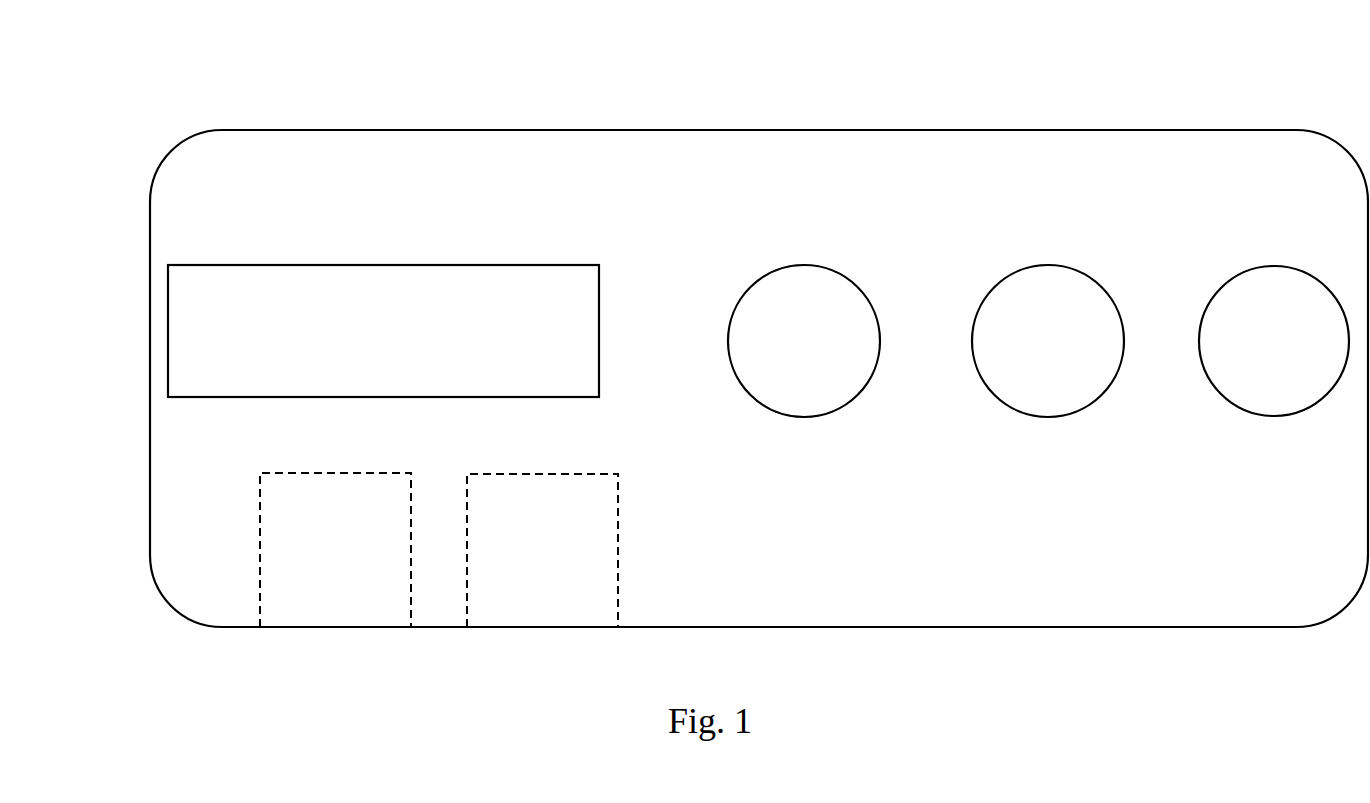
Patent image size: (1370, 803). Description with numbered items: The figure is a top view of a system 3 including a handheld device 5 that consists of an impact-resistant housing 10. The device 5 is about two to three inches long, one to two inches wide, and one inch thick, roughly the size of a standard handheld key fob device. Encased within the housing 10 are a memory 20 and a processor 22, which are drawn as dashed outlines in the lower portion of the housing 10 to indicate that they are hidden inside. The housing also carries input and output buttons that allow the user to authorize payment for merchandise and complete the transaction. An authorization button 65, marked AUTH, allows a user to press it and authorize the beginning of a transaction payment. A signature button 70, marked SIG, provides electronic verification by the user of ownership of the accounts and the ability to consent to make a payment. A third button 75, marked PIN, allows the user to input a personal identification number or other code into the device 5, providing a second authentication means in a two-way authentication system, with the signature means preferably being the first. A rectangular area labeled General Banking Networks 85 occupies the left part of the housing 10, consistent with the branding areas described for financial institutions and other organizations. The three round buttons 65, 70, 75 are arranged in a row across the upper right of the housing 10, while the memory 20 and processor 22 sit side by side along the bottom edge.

The system 3 is at (122, 182).
The device 5 is at (550, 94).
The impact-resistant housing 10 is at (1028, 636).
The general banking networks indicator 85 is at (298, 290).
The third button 75 is at (803, 292).
The signature button 70 is at (1048, 292).
The authorization button 65 is at (1256, 292).
The processor 22 is at (354, 577).
The memory 20 is at (523, 577).